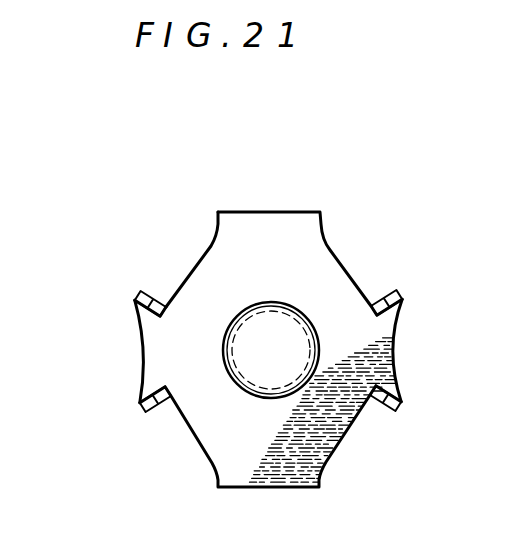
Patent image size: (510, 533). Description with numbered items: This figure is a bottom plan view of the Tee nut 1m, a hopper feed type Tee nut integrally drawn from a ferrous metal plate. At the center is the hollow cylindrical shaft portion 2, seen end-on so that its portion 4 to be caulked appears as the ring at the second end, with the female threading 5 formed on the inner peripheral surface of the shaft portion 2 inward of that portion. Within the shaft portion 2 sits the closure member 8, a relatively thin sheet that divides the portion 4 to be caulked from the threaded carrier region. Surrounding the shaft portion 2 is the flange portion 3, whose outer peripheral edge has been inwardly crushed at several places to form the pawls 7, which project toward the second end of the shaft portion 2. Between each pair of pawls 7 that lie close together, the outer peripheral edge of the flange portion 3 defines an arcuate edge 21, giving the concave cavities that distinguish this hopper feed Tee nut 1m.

The Tee nut 1m is at (410, 150).
The shaft portion 2 is at (238, 398).
The flange portion 3 is at (214, 257).
The portion to be caulked 4 is at (289, 396).
The female threading 5 is at (298, 316).
The pawls 7 is at (141, 288).
The closure member 8 is at (268, 323).
The arcuate edges 21 is at (140, 337).